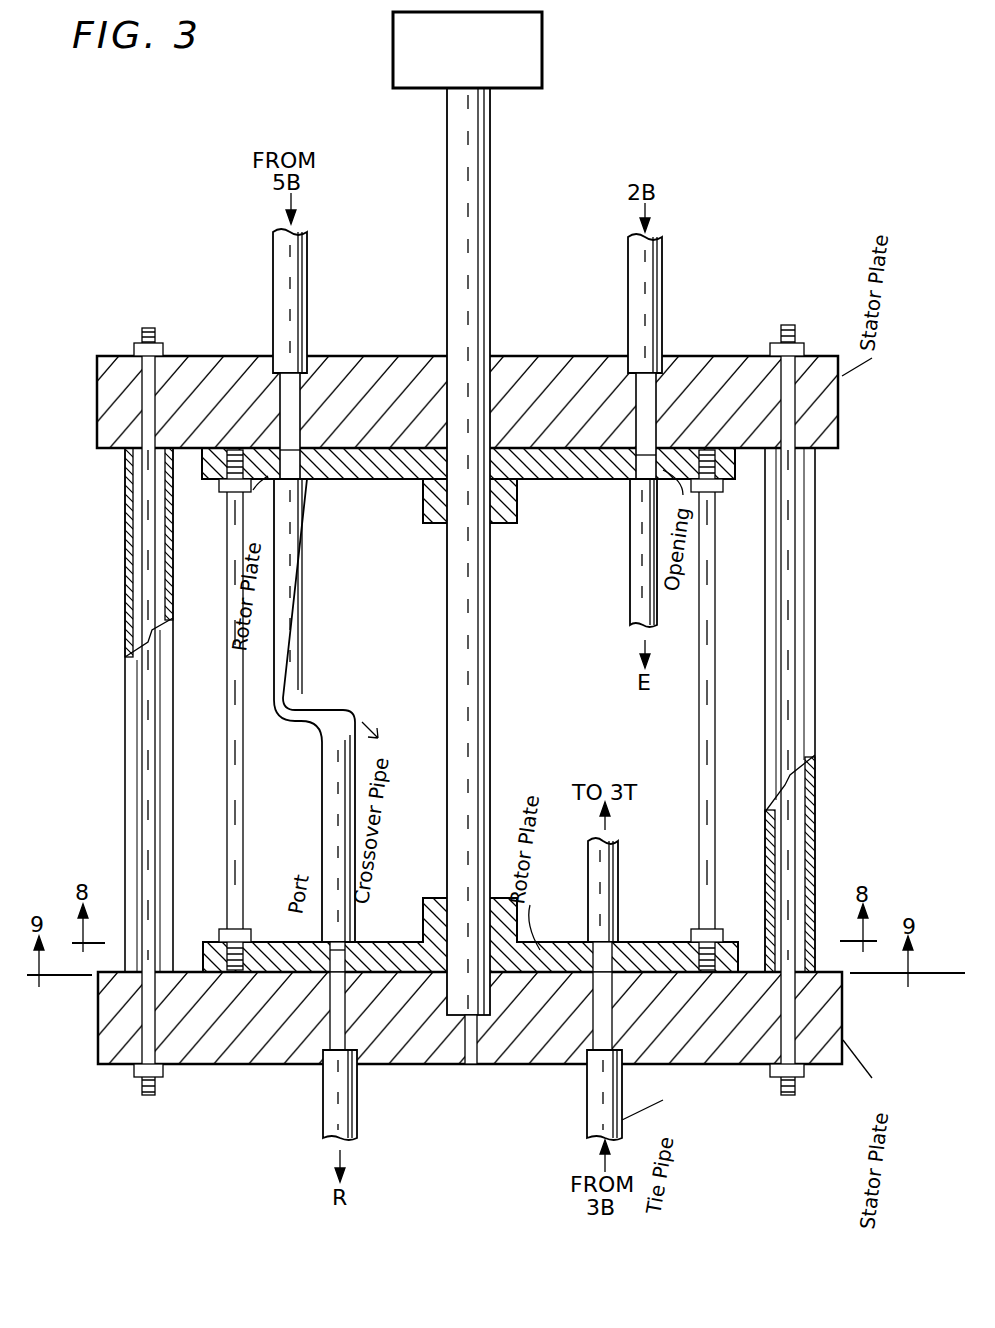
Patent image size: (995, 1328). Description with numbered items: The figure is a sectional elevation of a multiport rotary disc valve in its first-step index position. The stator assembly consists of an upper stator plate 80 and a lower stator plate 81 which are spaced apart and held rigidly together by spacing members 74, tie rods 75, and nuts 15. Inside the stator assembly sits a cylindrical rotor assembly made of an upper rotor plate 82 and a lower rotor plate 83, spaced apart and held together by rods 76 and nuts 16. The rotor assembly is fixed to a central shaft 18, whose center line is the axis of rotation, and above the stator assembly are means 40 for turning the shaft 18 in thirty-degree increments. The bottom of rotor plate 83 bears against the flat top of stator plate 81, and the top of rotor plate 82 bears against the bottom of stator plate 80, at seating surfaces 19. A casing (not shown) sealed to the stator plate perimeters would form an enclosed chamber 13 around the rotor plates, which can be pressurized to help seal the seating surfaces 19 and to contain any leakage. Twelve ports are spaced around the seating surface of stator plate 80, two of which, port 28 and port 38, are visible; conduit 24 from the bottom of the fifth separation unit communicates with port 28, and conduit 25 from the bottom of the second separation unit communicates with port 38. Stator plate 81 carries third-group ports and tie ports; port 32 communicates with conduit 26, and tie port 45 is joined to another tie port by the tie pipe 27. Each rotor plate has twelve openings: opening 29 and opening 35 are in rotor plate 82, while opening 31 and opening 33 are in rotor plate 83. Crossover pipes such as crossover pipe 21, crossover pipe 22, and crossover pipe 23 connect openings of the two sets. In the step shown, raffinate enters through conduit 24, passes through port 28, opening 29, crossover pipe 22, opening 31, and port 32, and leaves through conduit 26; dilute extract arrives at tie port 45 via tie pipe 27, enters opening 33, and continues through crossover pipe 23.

The chamber 13 is at (542, 643).
The nuts 15 is at (163, 350).
The nuts 16 is at (228, 494).
The shaft 18 is at (490, 183).
The seating surfaces 19 is at (350, 440).
The crossover pipe 21 is at (630, 553).
The crossover pipe 22 is at (307, 614).
The crossover pipe 23 is at (618, 882).
The conduit 24 is at (307, 270).
The conduit 25 is at (662, 280).
The conduit 26 is at (357, 1112).
The tie pipe 27 is at (587, 1110).
The port 28 is at (284, 386).
The opening 29 is at (300, 459).
The opening 31 is at (353, 960).
The port 32 is at (328, 1048).
The opening 33 is at (609, 954).
The opening 35 is at (646, 460).
The port 38 is at (640, 381).
The means for turning shaft 40 is at (544, 48).
The tie port 45 is at (612, 1030).
The spacing members 74 is at (125, 491).
The tie rods 75 is at (150, 330).
The rods 76 is at (243, 805).
The stator plate 80 is at (544, 356).
The stator plate 81 is at (414, 1065).
The rotor plate 82 is at (408, 499).
The rotor plate 83 is at (324, 954).